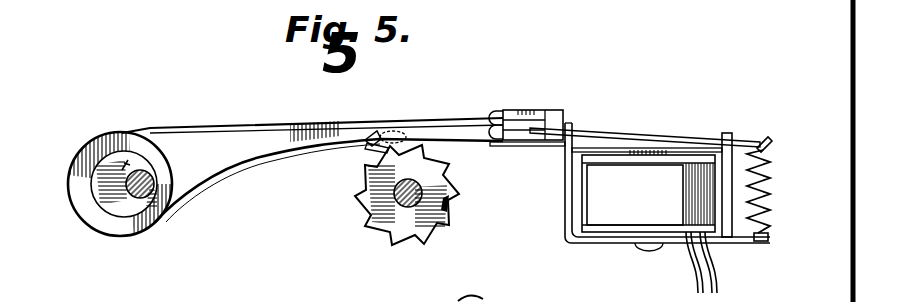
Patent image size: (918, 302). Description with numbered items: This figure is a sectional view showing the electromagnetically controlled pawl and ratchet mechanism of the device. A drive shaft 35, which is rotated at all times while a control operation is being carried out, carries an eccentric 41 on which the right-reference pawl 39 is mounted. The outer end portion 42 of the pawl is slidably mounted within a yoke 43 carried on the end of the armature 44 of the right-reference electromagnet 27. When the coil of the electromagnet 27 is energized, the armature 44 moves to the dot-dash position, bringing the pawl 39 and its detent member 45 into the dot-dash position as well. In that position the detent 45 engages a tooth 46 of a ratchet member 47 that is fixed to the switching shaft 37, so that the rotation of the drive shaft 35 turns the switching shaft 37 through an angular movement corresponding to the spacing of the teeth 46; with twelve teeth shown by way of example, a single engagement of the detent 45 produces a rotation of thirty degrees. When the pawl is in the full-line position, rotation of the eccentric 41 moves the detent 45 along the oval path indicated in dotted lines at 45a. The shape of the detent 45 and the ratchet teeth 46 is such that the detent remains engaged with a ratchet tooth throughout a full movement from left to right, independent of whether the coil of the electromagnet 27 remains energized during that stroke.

The right-reference electromagnet 27 is at (595, 210).
The drive shaft 35 is at (152, 176).
The switching shaft 37 is at (392, 208).
The right-reference pawl 39 is at (248, 136).
The eccentric 41 is at (102, 217).
The outer end portion 42 is at (498, 112).
The yoke 43 is at (540, 111).
The armature 44 is at (603, 131).
The detent member 45 is at (370, 141).
The oval path 45a is at (405, 130).
The tooth 46 is at (368, 152).
The ratchet member 47 is at (440, 178).